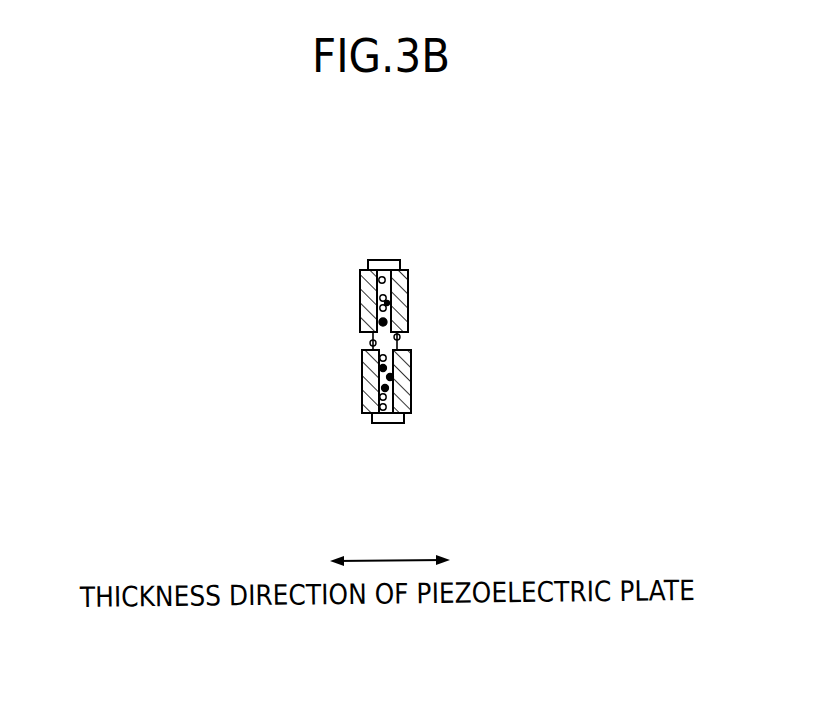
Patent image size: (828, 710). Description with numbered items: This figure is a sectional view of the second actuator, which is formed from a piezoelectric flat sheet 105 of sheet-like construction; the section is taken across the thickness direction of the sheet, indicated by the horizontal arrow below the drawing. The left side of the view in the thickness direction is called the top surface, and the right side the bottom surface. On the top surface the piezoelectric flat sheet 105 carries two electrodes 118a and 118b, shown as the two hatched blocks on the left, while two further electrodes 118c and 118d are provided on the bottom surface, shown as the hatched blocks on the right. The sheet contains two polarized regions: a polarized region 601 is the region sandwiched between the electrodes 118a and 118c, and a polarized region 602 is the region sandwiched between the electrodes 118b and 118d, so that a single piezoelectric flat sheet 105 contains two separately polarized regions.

The polarized region 601 is at (388, 260).
The polarized region 602 is at (392, 423).
The electrode 118a is at (361, 286).
The electrode 118b is at (362, 400).
The electrode 118c is at (408, 281).
The electrode 118d is at (411, 398).
The piezoelectric flat sheet 105 is at (372, 341).